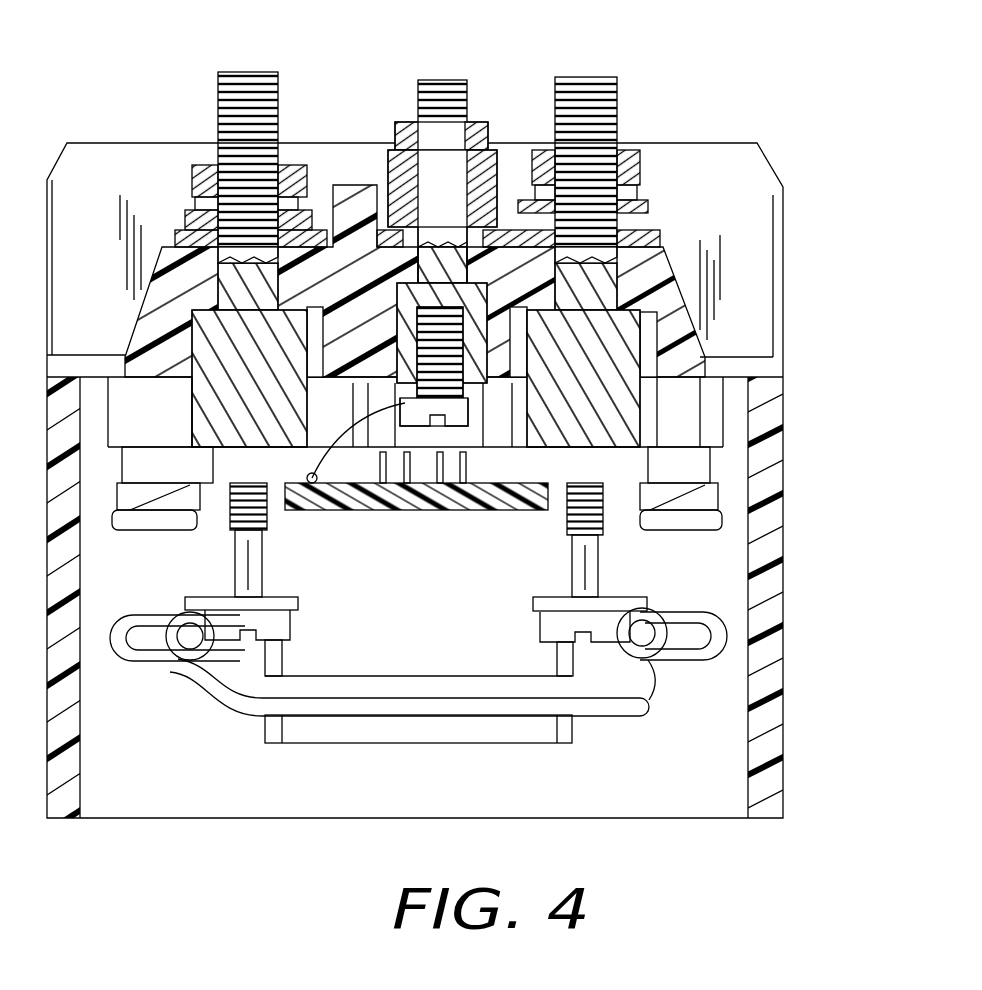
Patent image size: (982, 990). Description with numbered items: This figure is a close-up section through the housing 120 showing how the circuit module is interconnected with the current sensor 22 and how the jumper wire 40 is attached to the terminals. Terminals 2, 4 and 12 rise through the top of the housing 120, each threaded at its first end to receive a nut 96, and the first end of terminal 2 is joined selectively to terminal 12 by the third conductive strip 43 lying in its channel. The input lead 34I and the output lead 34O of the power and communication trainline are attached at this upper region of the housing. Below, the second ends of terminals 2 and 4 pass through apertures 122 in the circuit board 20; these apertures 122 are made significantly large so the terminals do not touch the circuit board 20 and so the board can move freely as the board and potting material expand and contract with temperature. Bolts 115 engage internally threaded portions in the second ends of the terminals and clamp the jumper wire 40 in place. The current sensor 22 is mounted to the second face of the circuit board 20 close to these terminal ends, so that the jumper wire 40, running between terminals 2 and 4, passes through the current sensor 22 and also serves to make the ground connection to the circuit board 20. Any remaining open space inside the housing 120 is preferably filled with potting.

The terminal 2 is at (598, 83).
The terminal 4 is at (257, 80).
The terminal 12 is at (442, 103).
The circuit board 20 is at (433, 515).
The current sensor 22 is at (403, 601).
The lead 34O is at (183, 220).
The lead 34I is at (650, 208).
The jumper wire 40 is at (653, 710).
The third conductive strip 43 is at (650, 233).
The nut 96 is at (207, 167).
The bolt 115 is at (307, 640).
The housing 120 is at (785, 583).
The aperture 122 is at (210, 530).